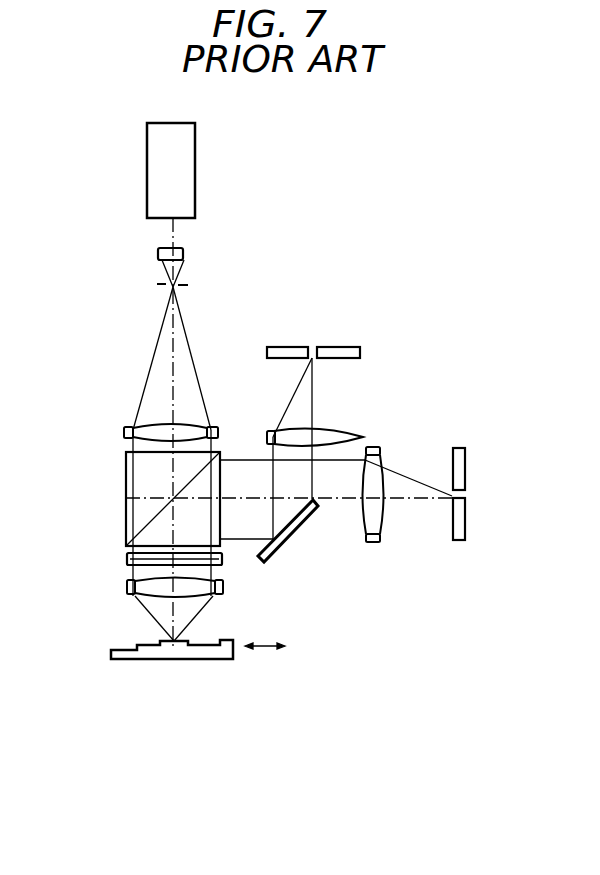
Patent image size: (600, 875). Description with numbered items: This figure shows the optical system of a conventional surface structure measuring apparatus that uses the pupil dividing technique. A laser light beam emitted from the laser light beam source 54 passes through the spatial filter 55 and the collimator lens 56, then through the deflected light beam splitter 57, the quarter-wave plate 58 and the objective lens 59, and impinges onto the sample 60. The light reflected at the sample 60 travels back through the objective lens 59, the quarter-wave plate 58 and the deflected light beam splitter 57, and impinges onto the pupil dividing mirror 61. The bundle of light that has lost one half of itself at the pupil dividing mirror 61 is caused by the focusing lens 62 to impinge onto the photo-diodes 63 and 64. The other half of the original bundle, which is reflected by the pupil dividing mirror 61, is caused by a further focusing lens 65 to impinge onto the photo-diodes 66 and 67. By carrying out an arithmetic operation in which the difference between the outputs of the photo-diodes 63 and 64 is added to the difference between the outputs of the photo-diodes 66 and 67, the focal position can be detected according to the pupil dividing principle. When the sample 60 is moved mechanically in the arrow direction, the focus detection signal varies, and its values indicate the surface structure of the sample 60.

The laser light beam source 54 is at (195, 178).
The spatial filter 55 is at (180, 288).
The collimator lens 56 is at (124, 430).
The deflected light beam splitter 57 is at (126, 526).
The λ/4 plate 58 is at (127, 559).
The objective lens 59 is at (127, 588).
The sample 60 is at (111, 653).
The pupil dividing mirror 61 is at (293, 534).
The focusing lens 62 is at (372, 542).
The photo-diode 63 is at (465, 473).
The photo-diode 64 is at (465, 522).
The lens 65 is at (267, 436).
The photo-diode 66 is at (267, 352).
The photo-diode 67 is at (360, 352).